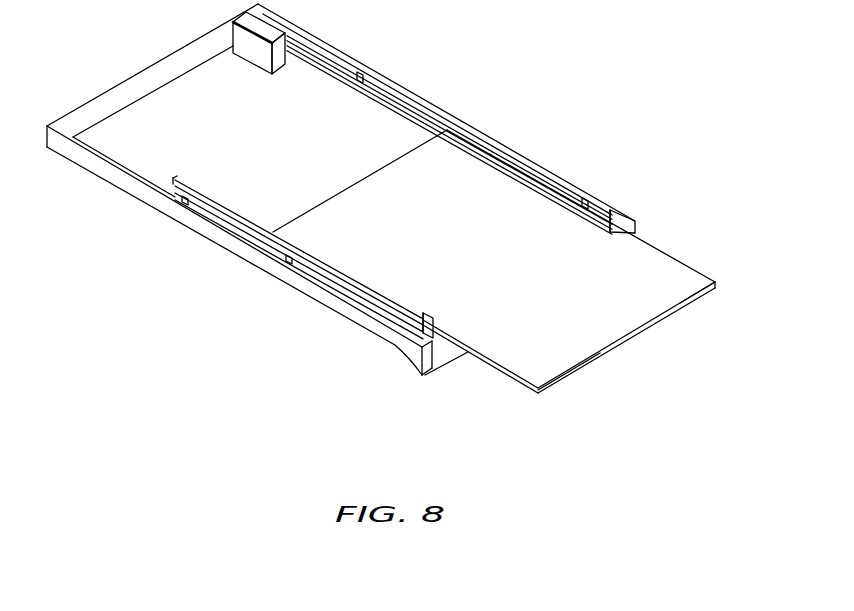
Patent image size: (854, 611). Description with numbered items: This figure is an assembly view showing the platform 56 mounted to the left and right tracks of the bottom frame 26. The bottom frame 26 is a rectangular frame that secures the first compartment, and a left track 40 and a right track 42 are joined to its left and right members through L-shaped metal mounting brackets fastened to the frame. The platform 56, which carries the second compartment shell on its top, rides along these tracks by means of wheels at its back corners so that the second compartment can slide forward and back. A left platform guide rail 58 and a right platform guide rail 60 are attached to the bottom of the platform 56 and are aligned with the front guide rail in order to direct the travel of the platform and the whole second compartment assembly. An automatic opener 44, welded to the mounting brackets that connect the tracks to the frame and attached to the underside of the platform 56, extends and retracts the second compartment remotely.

The bottom frame 26 is at (90, 173).
The left track 40 is at (207, 208).
The right track 42 is at (393, 90).
The automatic opener 44 is at (250, 62).
The platform 56 is at (675, 270).
The left platform guide rail 58 is at (522, 383).
The right platform guide rail 60 is at (713, 288).